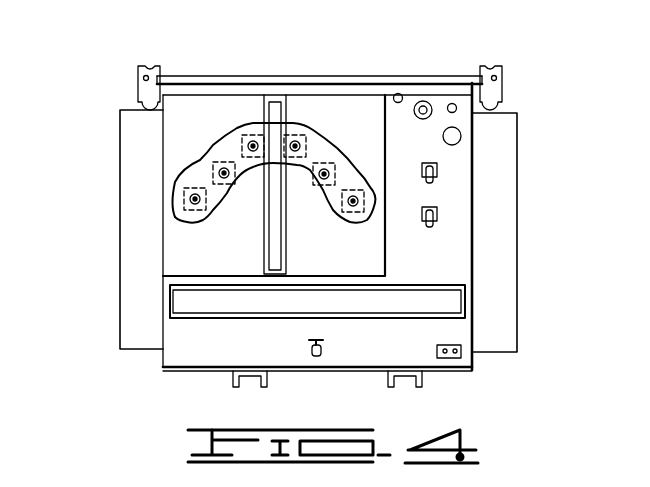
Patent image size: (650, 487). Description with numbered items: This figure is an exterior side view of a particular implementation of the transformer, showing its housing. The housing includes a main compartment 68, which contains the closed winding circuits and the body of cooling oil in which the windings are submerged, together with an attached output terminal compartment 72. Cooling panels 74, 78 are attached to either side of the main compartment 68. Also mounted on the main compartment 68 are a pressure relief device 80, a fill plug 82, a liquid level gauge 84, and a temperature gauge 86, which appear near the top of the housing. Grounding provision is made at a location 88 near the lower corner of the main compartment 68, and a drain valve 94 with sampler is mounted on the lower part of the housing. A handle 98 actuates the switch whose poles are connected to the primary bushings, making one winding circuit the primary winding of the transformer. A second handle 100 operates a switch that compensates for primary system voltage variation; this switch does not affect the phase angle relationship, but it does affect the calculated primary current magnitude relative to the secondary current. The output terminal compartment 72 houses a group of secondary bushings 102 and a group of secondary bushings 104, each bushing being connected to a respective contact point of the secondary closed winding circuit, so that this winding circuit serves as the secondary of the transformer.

The main compartment 68 is at (176, 345).
The output terminal compartment 72 is at (334, 113).
The cooling panel 74 is at (111, 165).
The cooling panel 78 is at (533, 241).
The pressure relief device 80 is at (401, 94).
The fill plug 82 is at (456, 104).
The liquid level gauge 84 is at (430, 103).
The temperature gauge 86 is at (458, 137).
The grounding location 88 is at (452, 358).
The drain valve 94 is at (312, 350).
The handle 98 is at (437, 172).
The handle 100 is at (424, 222).
The secondary bushings 102 is at (227, 198).
The secondary bushings 104 is at (321, 198).